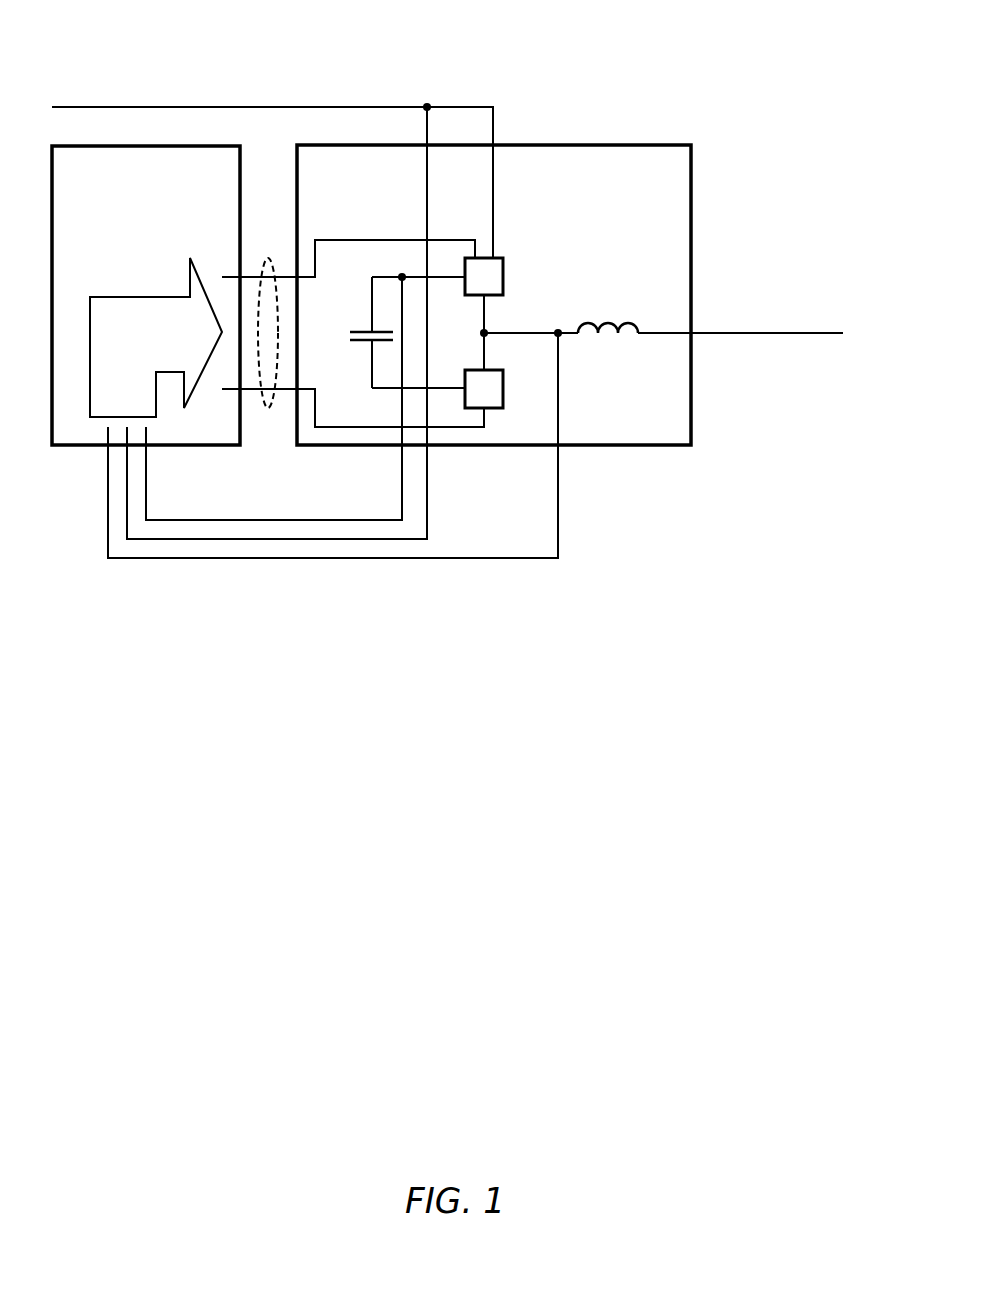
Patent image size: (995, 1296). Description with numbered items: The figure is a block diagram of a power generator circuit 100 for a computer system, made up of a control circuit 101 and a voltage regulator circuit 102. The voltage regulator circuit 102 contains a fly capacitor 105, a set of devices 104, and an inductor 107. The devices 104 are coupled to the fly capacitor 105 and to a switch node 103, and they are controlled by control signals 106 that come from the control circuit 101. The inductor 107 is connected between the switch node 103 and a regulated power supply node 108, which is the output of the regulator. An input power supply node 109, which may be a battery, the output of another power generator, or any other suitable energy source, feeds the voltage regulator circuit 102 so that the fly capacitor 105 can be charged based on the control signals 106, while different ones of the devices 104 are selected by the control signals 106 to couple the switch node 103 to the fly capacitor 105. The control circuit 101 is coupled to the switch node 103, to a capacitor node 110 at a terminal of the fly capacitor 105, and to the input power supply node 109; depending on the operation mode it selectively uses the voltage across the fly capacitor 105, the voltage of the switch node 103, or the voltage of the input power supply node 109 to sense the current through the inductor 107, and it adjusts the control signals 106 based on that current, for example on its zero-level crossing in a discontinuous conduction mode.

The power generator circuit 100 is at (708, 63).
The control circuit 101 is at (168, 209).
The voltage regulator circuit 102 is at (610, 229).
The switch node 103 is at (510, 558).
The devices 104 is at (512, 374).
The fly capacitor 105 is at (360, 328).
The control signals 106 is at (268, 422).
The inductor 107 is at (627, 337).
The regulated power supply node 108 is at (741, 306).
The input power supply node 109 is at (272, 283).
The capacitor node 110 is at (412, 483).